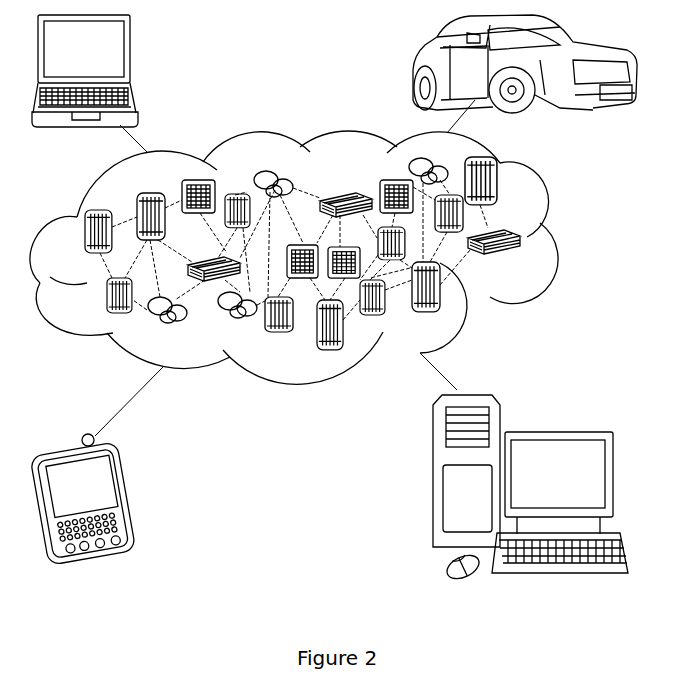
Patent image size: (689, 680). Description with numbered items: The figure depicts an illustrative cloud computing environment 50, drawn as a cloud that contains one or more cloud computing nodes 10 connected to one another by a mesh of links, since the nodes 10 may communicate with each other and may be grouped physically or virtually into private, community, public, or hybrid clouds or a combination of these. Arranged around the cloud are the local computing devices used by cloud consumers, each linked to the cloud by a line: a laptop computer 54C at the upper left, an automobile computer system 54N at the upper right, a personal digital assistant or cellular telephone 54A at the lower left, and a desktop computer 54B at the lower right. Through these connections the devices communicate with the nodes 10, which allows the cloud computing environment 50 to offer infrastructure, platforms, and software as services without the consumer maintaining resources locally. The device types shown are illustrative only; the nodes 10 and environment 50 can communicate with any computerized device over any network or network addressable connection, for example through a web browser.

The laptop computer 54C is at (131, 60).
The automobile computer system 54N is at (415, 68).
The personal digital assistant or cellular telephone 54A is at (125, 497).
The desktop computer 54B is at (554, 430).
The cloud computing environment 50 is at (555, 238).
The cloud computing node 10 is at (520, 258).